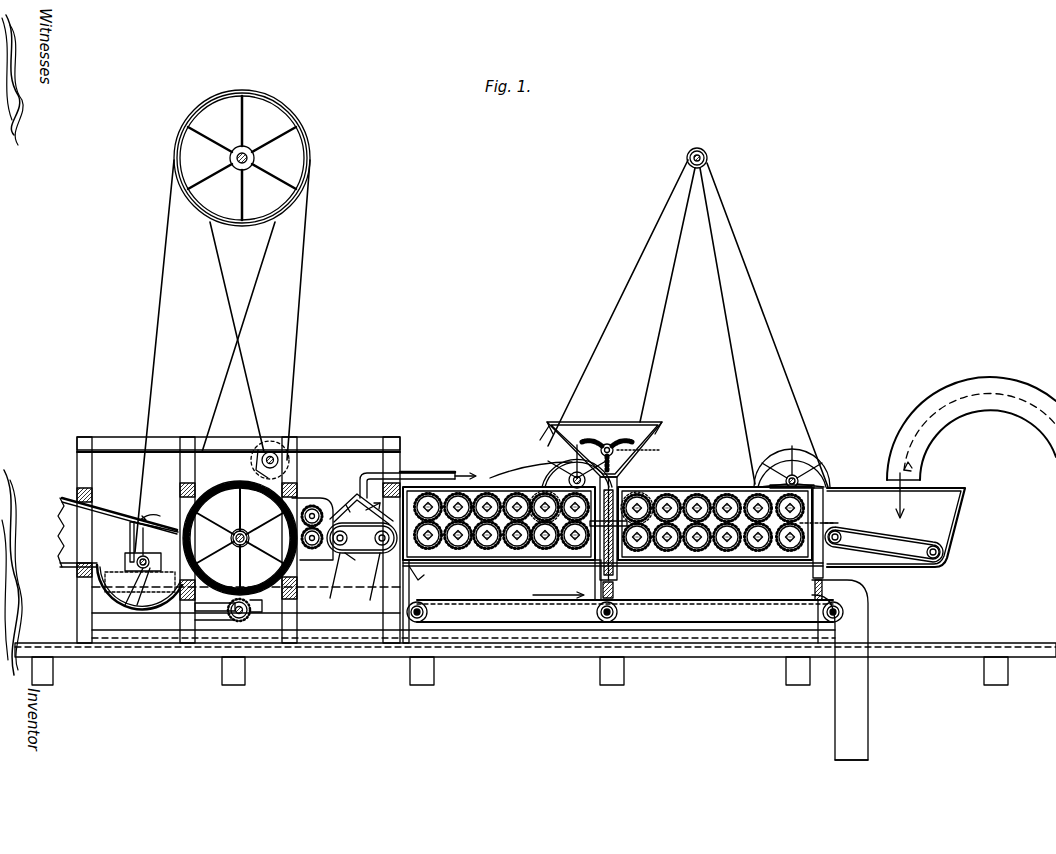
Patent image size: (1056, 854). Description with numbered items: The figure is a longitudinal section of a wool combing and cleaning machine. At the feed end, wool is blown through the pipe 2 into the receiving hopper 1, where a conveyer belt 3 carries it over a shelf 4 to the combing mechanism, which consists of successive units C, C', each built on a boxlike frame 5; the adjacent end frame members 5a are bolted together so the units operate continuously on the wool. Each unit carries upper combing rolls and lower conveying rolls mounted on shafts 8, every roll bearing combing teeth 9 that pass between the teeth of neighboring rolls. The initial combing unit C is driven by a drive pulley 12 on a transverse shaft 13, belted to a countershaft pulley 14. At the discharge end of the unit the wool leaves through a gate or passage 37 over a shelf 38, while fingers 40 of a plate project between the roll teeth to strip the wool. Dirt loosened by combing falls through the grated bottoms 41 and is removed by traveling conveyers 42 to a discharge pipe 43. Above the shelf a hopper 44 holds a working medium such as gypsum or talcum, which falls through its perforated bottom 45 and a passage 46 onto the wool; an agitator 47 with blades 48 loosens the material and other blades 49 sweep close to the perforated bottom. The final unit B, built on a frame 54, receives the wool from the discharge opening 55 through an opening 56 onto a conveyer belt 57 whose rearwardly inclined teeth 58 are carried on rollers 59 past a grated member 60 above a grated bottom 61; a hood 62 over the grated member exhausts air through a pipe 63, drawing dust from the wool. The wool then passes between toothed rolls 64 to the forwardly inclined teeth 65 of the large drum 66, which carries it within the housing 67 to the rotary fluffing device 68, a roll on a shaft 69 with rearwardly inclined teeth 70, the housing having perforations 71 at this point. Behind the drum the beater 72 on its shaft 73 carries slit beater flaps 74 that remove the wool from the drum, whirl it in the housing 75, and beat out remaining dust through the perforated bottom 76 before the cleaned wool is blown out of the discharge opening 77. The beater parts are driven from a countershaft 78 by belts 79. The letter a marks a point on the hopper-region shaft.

The receiving hopper 1 is at (945, 518).
The pipe 2 is at (995, 380).
The conveyer belt 3 is at (884, 544).
The shelf 4 is at (840, 516).
The frame 5 is at (544, 480).
The end frame members 5a is at (600, 577).
The shafts 8 is at (540, 545).
The combing teeth 9 is at (487, 548).
The drive pulley 12 is at (792, 457).
The transverse shaft 13 is at (818, 487).
The countershaft pulley 14 is at (706, 153).
The gate or passage 37 is at (624, 498).
The shelf 38 is at (560, 556).
The fingers 40 is at (618, 488).
The grated bottoms 41 is at (452, 566).
The traveling conveyers 42 is at (625, 607).
The discharge pipe 43 is at (855, 710).
The hopper 44 is at (549, 428).
The perforated bottom 45 is at (568, 483).
The passage 46 is at (607, 445).
The agitator 47 is at (604, 447).
The blades 48 is at (570, 443).
The blades 49 is at (523, 472).
The frame 54 is at (77, 440).
The discharge opening 55 is at (350, 553).
The opening 56 is at (423, 579).
The conveyer belt 57 is at (338, 585).
The teeth 58 is at (368, 586).
The rollers 59 is at (362, 538).
The grated member 60 is at (361, 509).
The grated bottom 61 is at (325, 553).
The hood 62 is at (358, 490).
The pipe 63 is at (437, 472).
The rolls 64 is at (247, 540).
The teeth 65 is at (245, 460).
The large drum 66 is at (240, 538).
The housing 67 is at (140, 520).
The rotary agitating, bunching or fluffing device 68 is at (265, 605).
The shaft 69 is at (245, 620).
The teeth 70 is at (232, 618).
The perforations 71 is at (215, 605).
The beater 72 is at (137, 600).
The shaft 73 is at (136, 560).
The beater flaps 74 is at (130, 530).
The housing 75 is at (143, 526).
The perforated bottom 76 is at (130, 602).
The discharge opening 77 is at (62, 540).
The countershaft 78 is at (256, 160).
The belts 79 is at (156, 322).
The final unit B is at (456, 530).
The initial combing unit C is at (715, 507).
The second combing unit C' is at (499, 502).
The shaft a is at (646, 442).